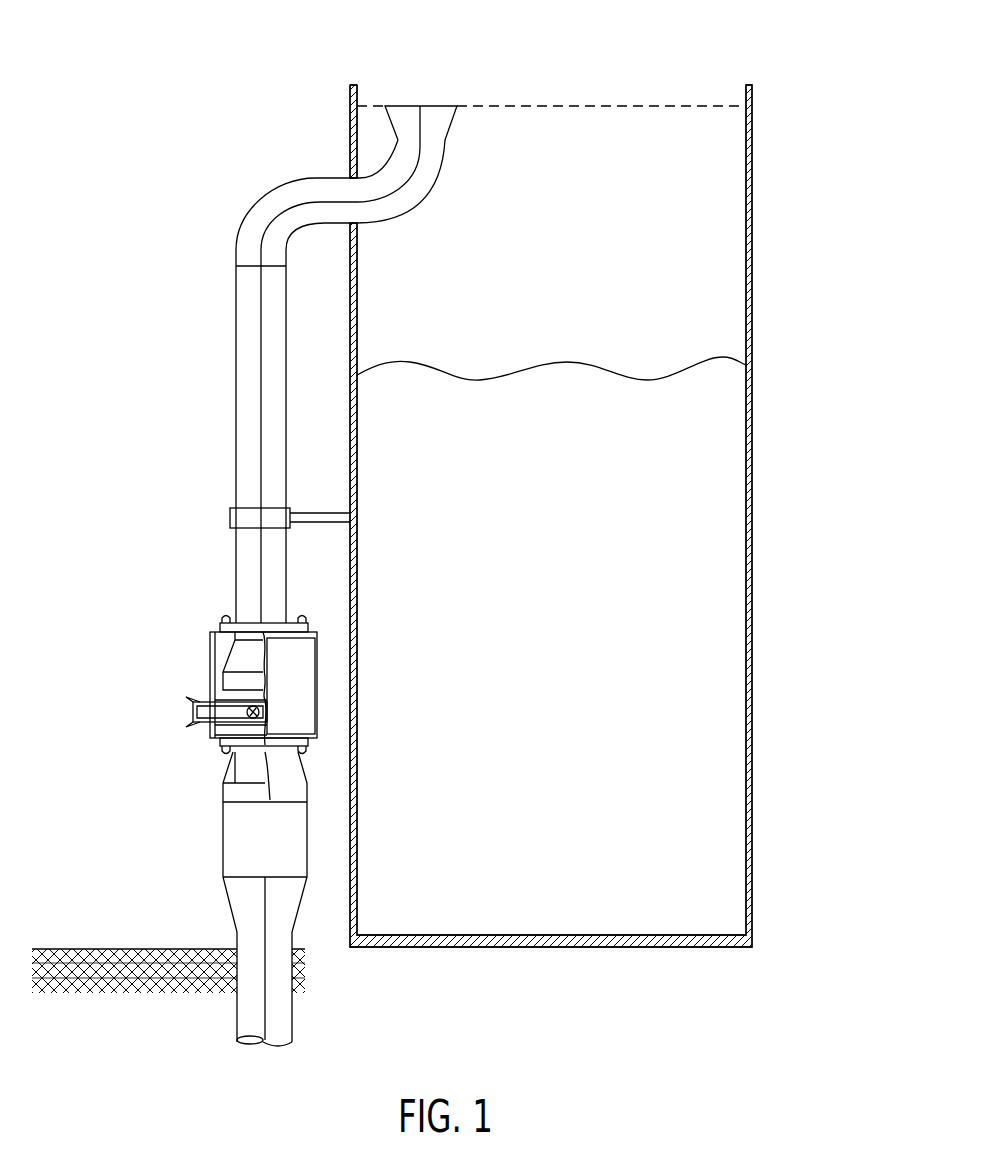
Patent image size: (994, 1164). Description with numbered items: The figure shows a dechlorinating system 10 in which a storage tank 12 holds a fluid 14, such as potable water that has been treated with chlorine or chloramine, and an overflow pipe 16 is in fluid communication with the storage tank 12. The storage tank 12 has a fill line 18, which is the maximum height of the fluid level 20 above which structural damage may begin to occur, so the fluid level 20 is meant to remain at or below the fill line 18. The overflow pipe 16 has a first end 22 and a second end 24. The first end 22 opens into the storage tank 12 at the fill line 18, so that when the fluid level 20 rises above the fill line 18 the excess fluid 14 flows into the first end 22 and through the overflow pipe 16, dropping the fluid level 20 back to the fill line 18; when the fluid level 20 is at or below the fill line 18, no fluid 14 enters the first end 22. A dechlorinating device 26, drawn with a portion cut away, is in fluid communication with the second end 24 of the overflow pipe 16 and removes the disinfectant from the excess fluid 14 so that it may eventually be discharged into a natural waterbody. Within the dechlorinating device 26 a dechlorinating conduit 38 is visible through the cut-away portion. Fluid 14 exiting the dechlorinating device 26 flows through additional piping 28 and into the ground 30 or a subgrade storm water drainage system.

The dechlorinating system 10 is at (178, 142).
The storage tank 12 is at (753, 222).
The fluid 14 is at (710, 477).
The overflow pipe 16 is at (236, 305).
The fill line 18 is at (693, 106).
The fluid level 20 is at (727, 353).
The first end 22 is at (405, 105).
The second end 24 is at (262, 623).
The dechlorinating device 26 is at (210, 665).
The additional piping 28 is at (228, 889).
The ground 30 is at (116, 949).
The dechlorinating conduit 38 is at (203, 727).